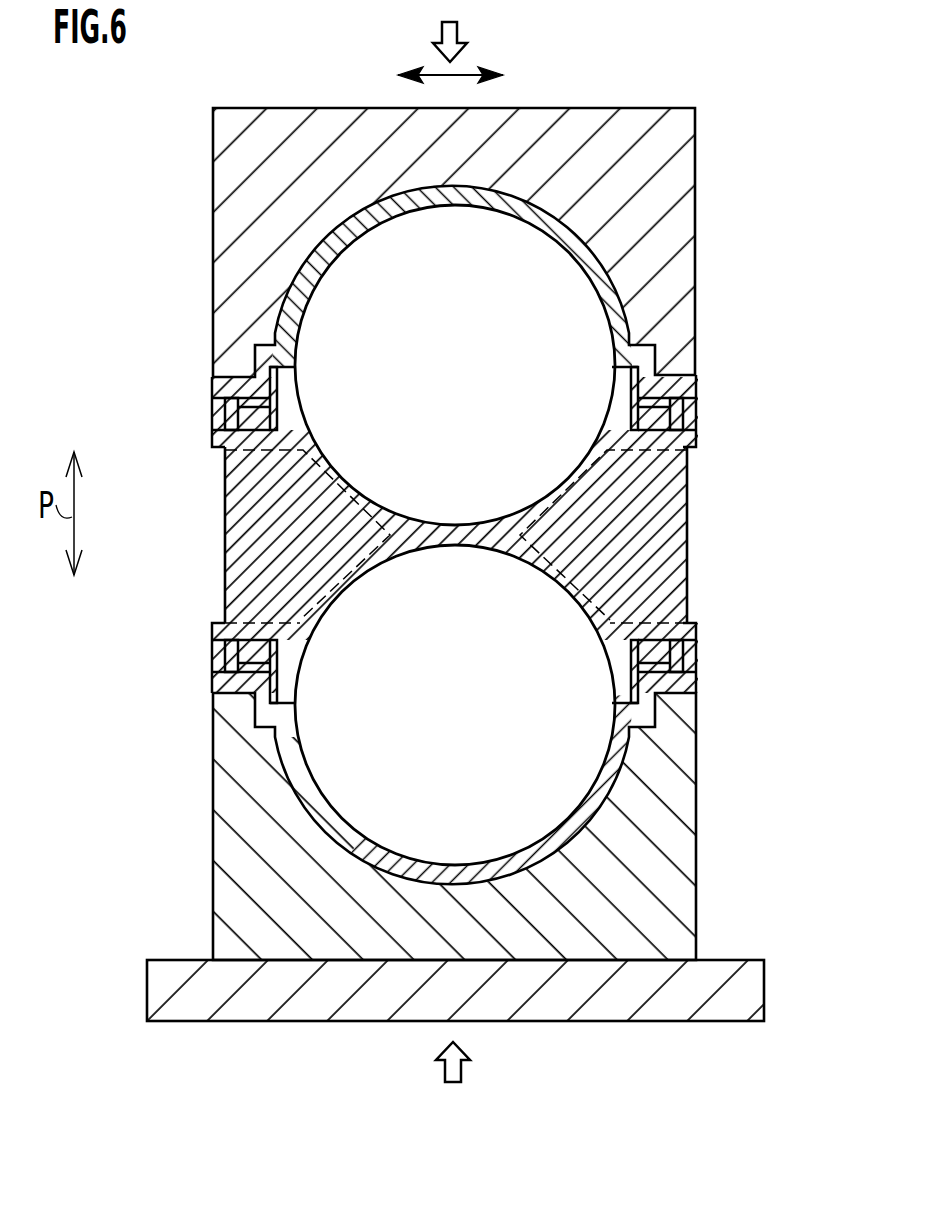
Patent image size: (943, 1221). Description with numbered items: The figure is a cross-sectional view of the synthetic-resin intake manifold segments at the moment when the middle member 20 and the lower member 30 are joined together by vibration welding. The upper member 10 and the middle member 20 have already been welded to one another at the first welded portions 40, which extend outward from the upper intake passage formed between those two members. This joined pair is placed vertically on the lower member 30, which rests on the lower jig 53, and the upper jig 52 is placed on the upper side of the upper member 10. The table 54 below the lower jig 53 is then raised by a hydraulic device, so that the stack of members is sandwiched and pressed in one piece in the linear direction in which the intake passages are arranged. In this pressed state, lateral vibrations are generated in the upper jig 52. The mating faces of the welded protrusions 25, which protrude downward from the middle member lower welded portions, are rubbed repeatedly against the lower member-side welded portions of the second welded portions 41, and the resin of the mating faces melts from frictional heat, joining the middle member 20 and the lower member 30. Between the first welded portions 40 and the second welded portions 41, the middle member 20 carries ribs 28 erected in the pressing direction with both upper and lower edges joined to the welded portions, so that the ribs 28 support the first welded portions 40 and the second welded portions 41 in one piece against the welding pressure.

The upper member 10 is at (595, 252).
The middle member 20 is at (687, 558).
The welded protrusion 25 is at (255, 650).
The rib 28 is at (262, 537).
The lower member 30 is at (617, 793).
The first welded portion 40 is at (248, 405).
The second welded portion 41 is at (240, 660).
The upper jig 52 is at (672, 125).
The lower jig 53 is at (685, 855).
The table 54 is at (752, 983).